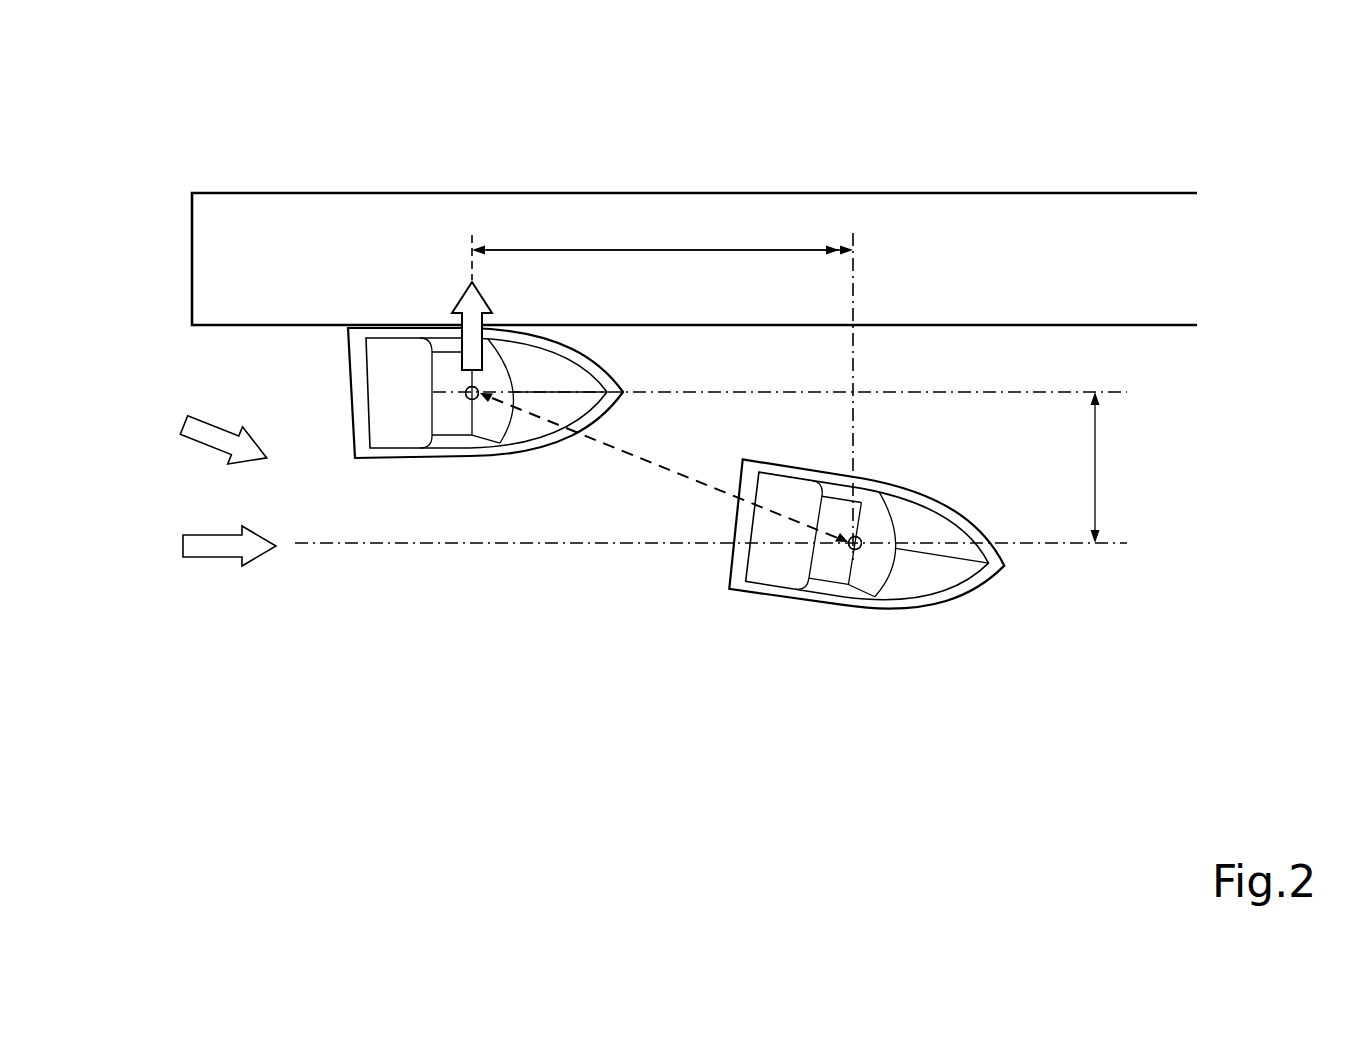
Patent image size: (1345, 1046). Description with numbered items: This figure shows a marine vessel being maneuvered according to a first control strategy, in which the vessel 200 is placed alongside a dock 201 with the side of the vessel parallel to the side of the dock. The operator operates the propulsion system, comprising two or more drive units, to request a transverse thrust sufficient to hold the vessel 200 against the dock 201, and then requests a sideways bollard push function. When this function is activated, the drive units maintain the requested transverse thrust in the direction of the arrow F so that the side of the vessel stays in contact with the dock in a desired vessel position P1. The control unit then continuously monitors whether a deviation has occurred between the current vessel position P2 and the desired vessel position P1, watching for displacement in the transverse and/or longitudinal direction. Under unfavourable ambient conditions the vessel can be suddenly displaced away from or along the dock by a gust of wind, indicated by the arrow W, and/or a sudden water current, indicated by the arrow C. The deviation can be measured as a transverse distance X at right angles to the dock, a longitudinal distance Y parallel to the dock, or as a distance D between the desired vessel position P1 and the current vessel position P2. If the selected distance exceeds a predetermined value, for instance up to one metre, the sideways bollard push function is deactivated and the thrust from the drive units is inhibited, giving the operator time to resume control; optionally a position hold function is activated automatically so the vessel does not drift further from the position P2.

The dock 201 is at (350, 227).
The vessel 200 is at (408, 478).
The arrow indicating transverse thrust F is at (477, 277).
The arrow indicating gust of wind W is at (201, 416).
The arrow indicating water current C is at (224, 574).
The longitudinal distance Y is at (662, 234).
The transverse distance X is at (1110, 467).
The distance between desired and current vessel position D is at (664, 467).
The desired vessel position P1 is at (470, 405).
The current vessel position P2 is at (858, 555).